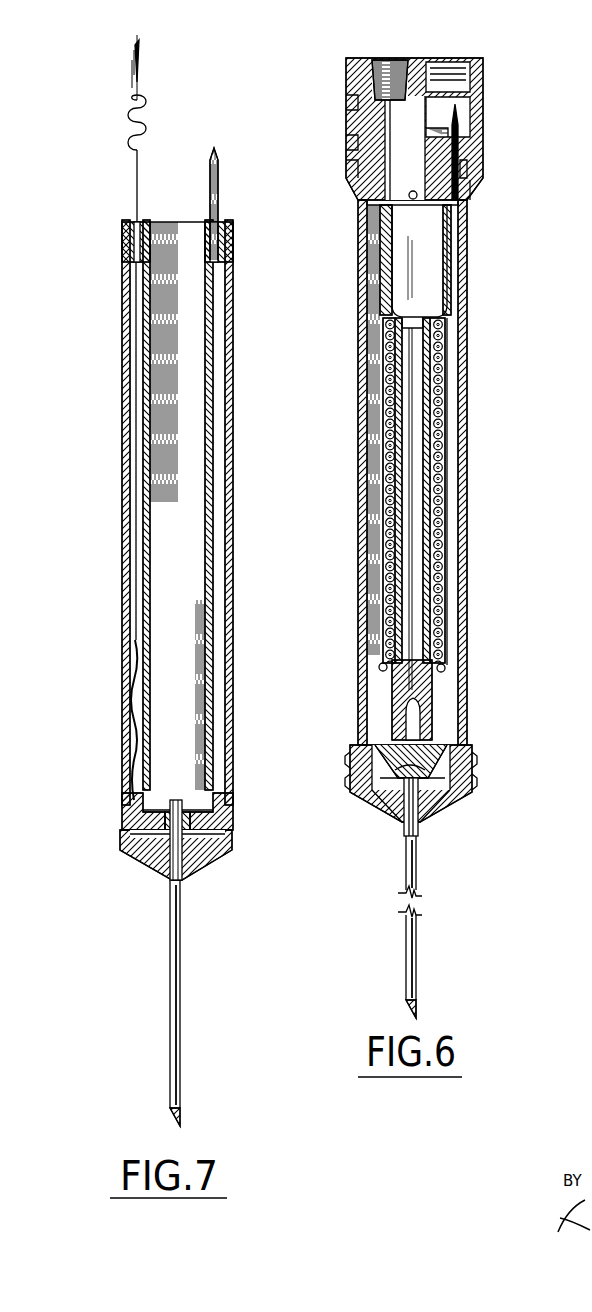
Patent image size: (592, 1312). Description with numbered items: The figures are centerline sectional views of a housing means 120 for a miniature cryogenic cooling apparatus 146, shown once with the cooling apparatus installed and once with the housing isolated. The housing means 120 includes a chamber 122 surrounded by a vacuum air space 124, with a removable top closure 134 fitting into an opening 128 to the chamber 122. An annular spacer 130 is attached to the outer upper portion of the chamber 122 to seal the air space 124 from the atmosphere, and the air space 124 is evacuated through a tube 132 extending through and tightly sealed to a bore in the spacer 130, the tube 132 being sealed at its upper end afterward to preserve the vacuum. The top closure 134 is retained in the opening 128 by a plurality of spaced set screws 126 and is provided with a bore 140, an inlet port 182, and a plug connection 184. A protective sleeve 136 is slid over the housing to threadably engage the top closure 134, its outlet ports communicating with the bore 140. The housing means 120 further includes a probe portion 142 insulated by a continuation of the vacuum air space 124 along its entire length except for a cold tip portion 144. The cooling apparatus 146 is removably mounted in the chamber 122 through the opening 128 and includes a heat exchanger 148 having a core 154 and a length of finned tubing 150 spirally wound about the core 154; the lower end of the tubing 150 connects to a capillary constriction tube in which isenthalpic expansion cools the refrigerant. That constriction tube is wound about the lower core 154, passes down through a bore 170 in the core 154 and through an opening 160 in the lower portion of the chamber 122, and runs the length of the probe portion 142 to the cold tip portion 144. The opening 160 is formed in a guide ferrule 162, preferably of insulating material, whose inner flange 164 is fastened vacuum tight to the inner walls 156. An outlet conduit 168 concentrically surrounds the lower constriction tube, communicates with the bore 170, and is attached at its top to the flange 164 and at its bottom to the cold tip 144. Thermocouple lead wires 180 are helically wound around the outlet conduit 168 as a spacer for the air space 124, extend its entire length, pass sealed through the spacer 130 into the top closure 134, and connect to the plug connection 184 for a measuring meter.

In FIG. 6, the housing means 120 is at (468, 357).
In FIG. 7, the housing means 120 is at (235, 450).
In FIG. 6, the chamber 122 is at (452, 250).
In FIG. 6, the vacuum air space 124 is at (384, 296).
In FIG. 7, the vacuum air space 124 is at (128, 676).
In FIG. 6, the set screws 126 is at (420, 190).
In FIG. 7, the opening 128 is at (178, 232).
In FIG. 7, the annular spacer 130 is at (140, 222).
In FIG. 6, the tube 132 is at (463, 130).
In FIG. 7, the tube 132 is at (220, 165).
In FIG. 6, the top closure 134 is at (352, 68).
In FIG. 6, the protective sleeve 136 is at (470, 182).
In FIG. 6, the bore 140 is at (347, 195).
In FIG. 6, the probe portion 142 is at (415, 866).
In FIG. 7, the probe portion 142 is at (178, 1005).
In FIG. 6, the cold tip portion 144 is at (418, 1005).
In FIG. 7, the cold tip portion 144 is at (185, 1118).
In FIG. 6, the miniature cryogenic cooling apparatus 146 is at (440, 290).
In FIG. 6, the heat exchanger 148 is at (430, 320).
In FIG. 6, the tubing 150 is at (395, 238).
In FIG. 6, the core 154 is at (440, 675).
In FIG. 6, the inner walls 156 is at (455, 665).
In FIG. 6, the opening 160 is at (352, 785).
In FIG. 6, the guide ferrule 162 is at (455, 755).
In FIG. 6, the inner flange 164 is at (448, 786).
In FIG. 6, the outlet conduit 168 is at (462, 810).
In FIG. 6, the bore 170 is at (420, 735).
In FIG. 7, the lead wires 180 is at (136, 553).
In FIG. 6, the inlet port 182 is at (390, 60).
In FIG. 6, the plug connection 184 is at (452, 65).